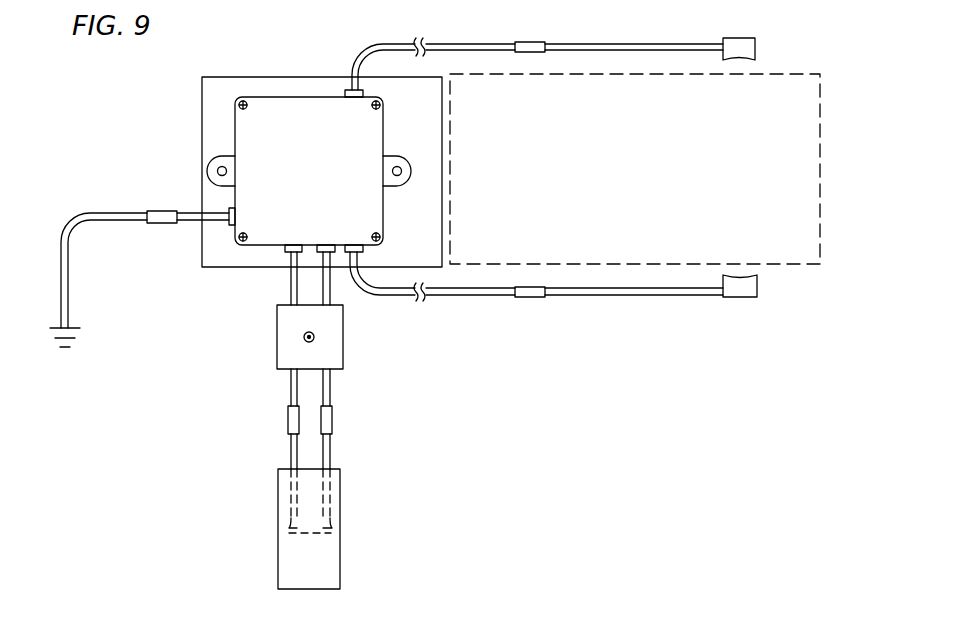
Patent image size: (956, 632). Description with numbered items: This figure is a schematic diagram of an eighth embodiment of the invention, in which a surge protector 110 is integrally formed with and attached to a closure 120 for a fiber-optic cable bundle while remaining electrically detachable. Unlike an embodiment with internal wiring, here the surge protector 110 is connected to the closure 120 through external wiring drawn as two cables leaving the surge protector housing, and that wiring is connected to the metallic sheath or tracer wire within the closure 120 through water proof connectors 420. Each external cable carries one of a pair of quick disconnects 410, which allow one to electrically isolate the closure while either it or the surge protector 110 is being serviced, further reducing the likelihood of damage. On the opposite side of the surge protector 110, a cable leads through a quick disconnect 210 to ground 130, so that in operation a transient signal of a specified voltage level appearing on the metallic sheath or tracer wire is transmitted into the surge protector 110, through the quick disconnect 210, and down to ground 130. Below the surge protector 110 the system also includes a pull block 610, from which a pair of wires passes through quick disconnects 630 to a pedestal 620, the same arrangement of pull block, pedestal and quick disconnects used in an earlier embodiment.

The surge protector 110 is at (282, 90).
The closure 120 is at (780, 72).
The ground 130 is at (75, 328).
The quick disconnect 210 is at (160, 211).
The quick disconnects 410 is at (530, 42).
The water proof connectors 420 is at (745, 38).
The pull block 610 is at (343, 353).
The pedestal 620 is at (340, 562).
The quick disconnects 630 is at (288, 415).